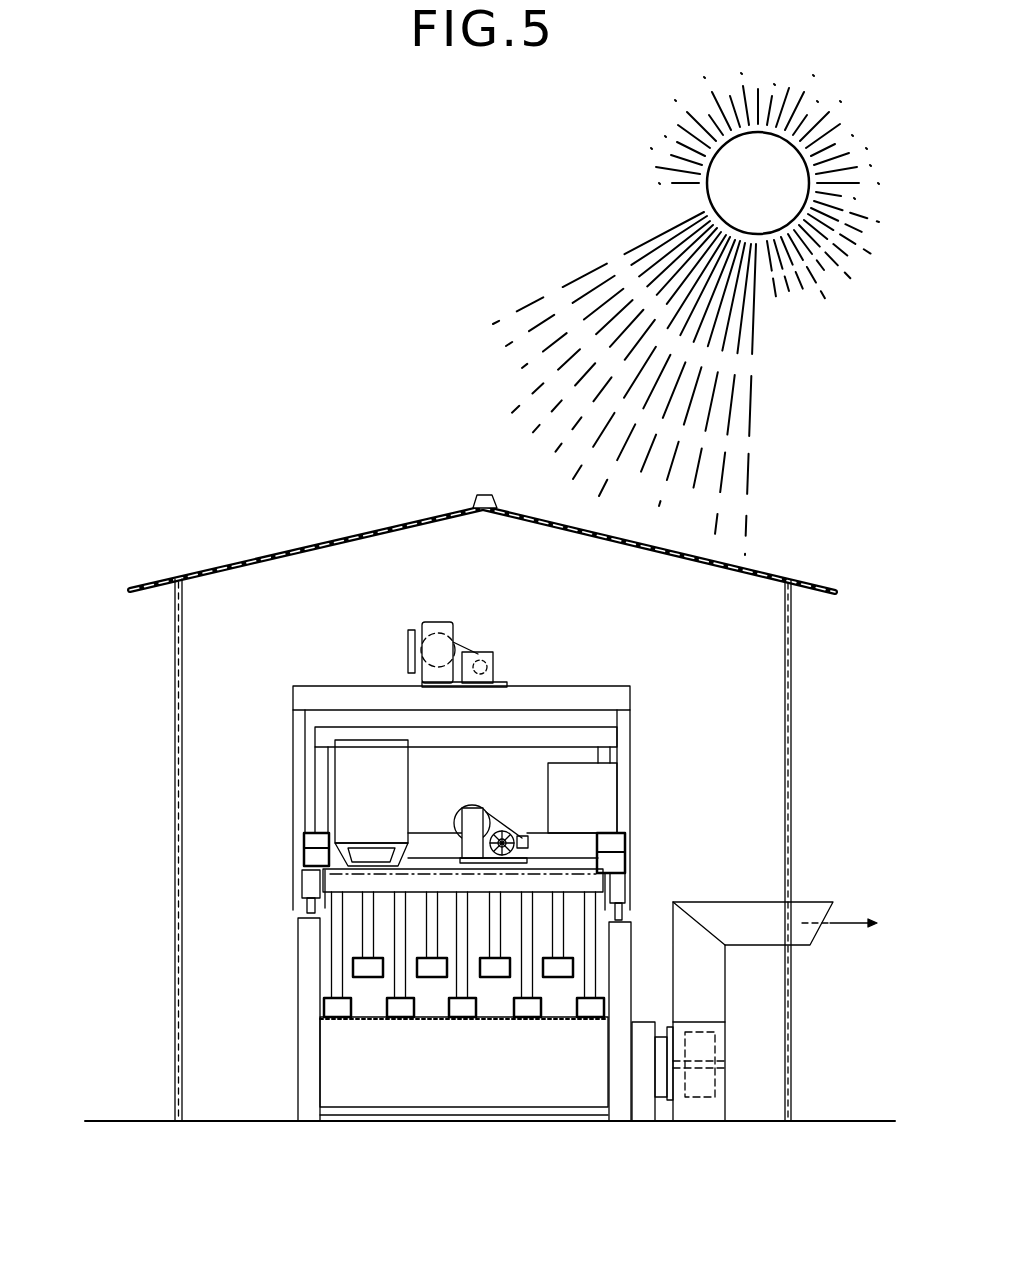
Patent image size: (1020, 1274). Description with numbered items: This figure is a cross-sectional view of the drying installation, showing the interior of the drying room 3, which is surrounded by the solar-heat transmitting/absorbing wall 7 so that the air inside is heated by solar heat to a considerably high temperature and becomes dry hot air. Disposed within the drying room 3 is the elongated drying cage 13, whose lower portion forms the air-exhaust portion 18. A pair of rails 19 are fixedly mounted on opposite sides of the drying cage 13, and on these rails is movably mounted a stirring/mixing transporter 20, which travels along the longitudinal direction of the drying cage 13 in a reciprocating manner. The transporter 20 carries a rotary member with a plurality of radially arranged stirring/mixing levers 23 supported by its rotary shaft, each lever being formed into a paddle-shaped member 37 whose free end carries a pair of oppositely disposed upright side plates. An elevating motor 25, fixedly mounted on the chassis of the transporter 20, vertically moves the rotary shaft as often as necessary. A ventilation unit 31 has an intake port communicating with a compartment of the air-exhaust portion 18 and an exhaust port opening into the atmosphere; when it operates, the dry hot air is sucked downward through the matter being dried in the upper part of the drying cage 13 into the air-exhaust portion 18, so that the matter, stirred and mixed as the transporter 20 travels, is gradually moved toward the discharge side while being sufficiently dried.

The drying room 3 is at (603, 632).
The solar-heat transmitting/absorbing wall 7 is at (543, 521).
The drying cage 13 is at (300, 1046).
The air-exhaust portion 18 is at (470, 1092).
The rails 19 is at (305, 915).
The stirring/mixing transporter 20 is at (648, 870).
The stirring/mixing levers 23 is at (466, 975).
The elevating motor 25 is at (437, 622).
The ventilation unit 31 is at (706, 1105).
The paddle-shaped member 37 is at (405, 1008).